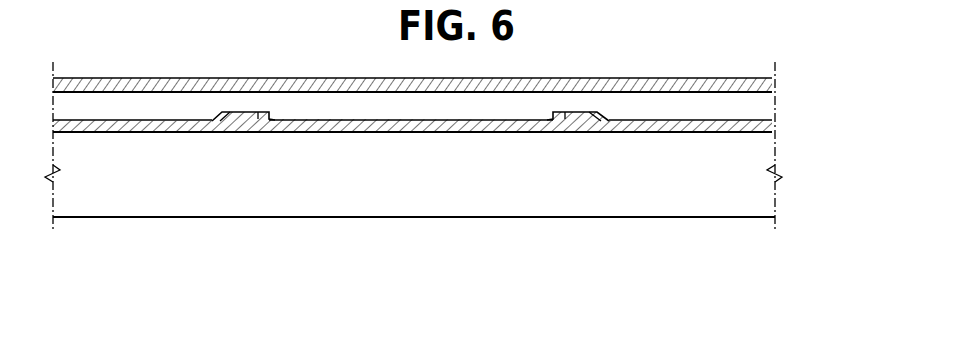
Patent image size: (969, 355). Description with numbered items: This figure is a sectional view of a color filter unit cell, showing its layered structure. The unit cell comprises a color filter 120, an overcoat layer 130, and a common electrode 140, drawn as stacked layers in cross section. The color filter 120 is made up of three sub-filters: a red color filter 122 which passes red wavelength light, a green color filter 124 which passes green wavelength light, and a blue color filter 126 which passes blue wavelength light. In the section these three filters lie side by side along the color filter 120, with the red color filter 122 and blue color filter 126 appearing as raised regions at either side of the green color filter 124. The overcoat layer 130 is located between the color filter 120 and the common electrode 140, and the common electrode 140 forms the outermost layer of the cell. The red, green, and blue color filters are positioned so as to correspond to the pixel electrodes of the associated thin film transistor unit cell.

The color filter 120 is at (412, 219).
The red color filter 122 is at (163, 131).
The green color filter 124 is at (413, 131).
The blue color filter 126 is at (587, 195).
The overcoat layer 130 is at (768, 107).
The common electrode 140 is at (772, 83).